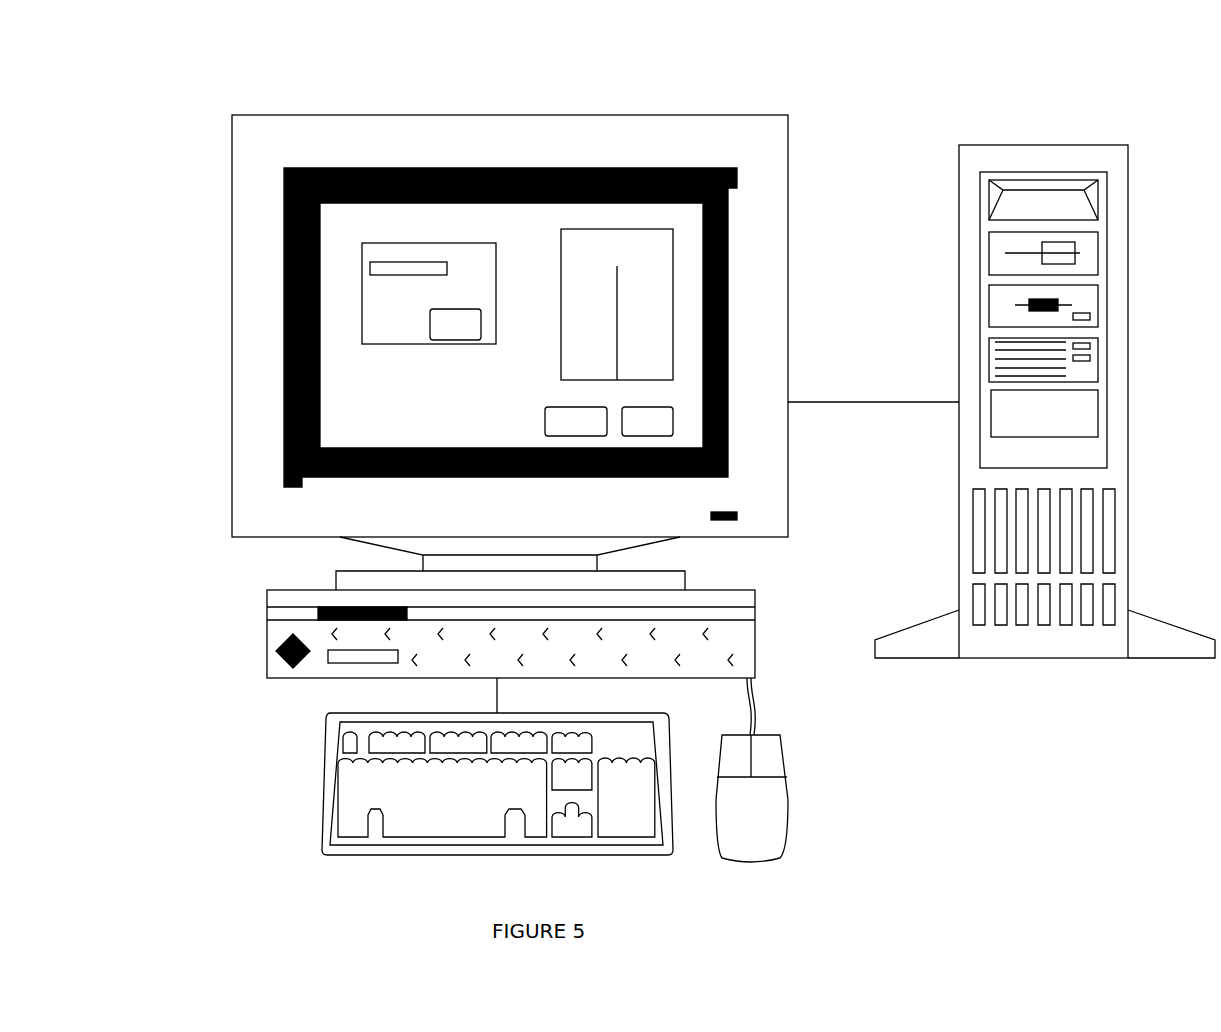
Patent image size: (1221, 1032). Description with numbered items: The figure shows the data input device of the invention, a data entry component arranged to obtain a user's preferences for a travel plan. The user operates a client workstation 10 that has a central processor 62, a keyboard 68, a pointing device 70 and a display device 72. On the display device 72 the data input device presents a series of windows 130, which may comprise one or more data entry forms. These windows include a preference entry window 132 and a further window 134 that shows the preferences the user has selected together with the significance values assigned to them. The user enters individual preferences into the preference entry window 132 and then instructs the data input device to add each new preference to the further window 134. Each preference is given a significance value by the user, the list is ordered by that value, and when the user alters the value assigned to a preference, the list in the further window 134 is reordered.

The client workstation 10 is at (892, 123).
The central processor 62 is at (1115, 205).
The keyboard 68 is at (318, 832).
The pointing device 70 is at (772, 833).
The display device 72 is at (268, 370).
The series of windows 130 is at (520, 228).
The preference entry window 132 is at (410, 318).
The further window 134 is at (647, 250).